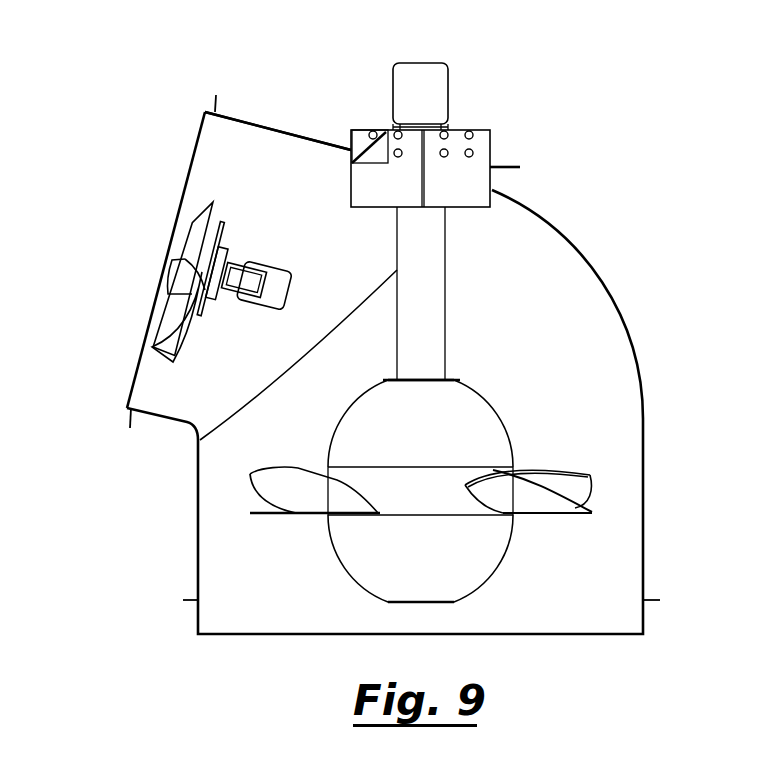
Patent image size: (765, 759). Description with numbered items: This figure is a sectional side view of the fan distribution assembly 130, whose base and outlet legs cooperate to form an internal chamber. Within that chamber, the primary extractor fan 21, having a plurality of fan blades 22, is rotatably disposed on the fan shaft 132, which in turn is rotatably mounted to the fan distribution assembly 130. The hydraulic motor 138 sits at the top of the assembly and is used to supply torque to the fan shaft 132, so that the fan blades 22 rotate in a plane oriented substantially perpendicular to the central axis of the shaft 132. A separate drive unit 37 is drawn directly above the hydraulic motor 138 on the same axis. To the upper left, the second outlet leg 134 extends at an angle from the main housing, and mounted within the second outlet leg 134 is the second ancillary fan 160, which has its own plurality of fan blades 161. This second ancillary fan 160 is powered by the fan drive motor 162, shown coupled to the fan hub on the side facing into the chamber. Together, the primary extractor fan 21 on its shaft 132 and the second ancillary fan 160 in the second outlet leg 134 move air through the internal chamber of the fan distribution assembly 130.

The fan distribution assembly 130 is at (558, 182).
The second outlet leg 134 is at (245, 118).
The hydraulic motor 138 is at (473, 147).
The drive motor 37 is at (425, 73).
The fan shaft 132 is at (432, 295).
The primary extractor fan 21 is at (468, 432).
The fan blades 22 is at (278, 487).
The second ancillary fan 160 is at (173, 272).
The fan blades 161 is at (200, 212).
The fan drive motor 162 is at (276, 278).